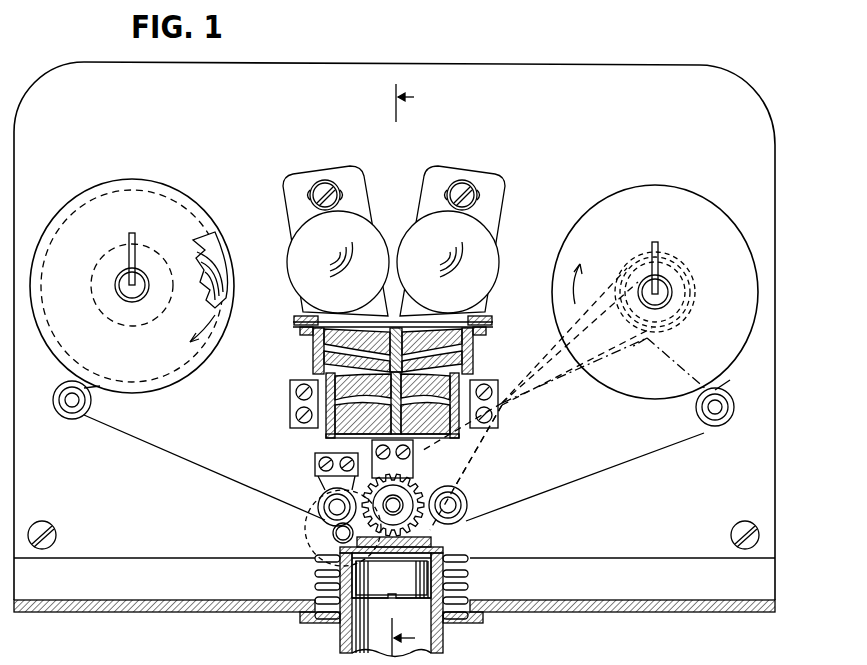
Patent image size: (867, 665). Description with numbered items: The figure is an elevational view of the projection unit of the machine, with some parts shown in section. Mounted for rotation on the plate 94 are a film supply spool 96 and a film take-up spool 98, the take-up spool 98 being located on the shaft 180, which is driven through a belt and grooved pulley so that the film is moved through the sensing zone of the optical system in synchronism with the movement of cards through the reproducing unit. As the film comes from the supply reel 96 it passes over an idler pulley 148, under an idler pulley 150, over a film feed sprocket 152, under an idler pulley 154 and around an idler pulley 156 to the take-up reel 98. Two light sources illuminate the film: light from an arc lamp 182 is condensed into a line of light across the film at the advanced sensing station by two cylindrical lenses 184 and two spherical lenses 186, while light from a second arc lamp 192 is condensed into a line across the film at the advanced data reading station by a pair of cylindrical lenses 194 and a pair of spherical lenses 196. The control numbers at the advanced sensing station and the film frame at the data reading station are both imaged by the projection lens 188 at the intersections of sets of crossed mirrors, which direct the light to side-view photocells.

The plate 94 is at (675, 70).
The film supply spool 96 is at (170, 214).
The film take-up spool 98 is at (606, 208).
The idler pulley 148 is at (64, 411).
The idler pulley 150 is at (327, 500).
The film feed sprocket 152 is at (430, 522).
The idler pulley 154 is at (458, 503).
The idler pulley 156 is at (716, 427).
The shaft 180 is at (660, 292).
The arc lamp 182 is at (360, 233).
The cylindrical lenses 184 is at (320, 343).
The spherical lenses 186 is at (340, 395).
The projection lens 188 is at (340, 620).
The arc lamp 192 is at (485, 258).
The cylindrical lenses 194 is at (468, 343).
The spherical lenses 196 is at (452, 398).